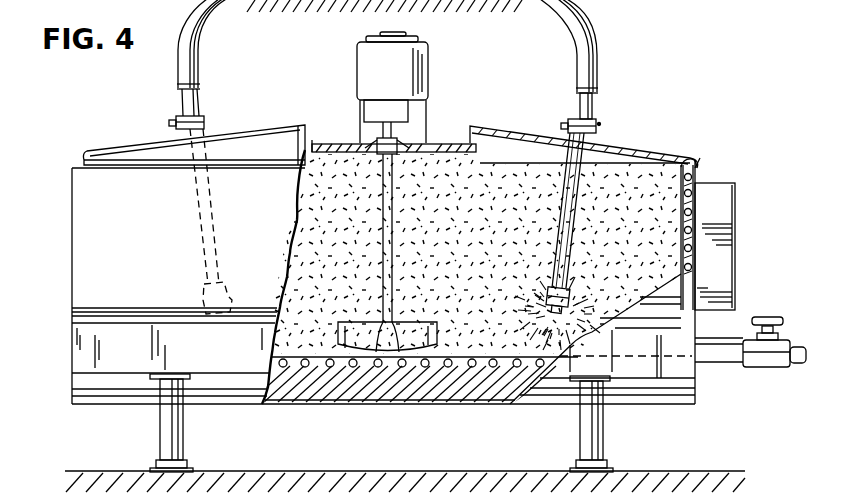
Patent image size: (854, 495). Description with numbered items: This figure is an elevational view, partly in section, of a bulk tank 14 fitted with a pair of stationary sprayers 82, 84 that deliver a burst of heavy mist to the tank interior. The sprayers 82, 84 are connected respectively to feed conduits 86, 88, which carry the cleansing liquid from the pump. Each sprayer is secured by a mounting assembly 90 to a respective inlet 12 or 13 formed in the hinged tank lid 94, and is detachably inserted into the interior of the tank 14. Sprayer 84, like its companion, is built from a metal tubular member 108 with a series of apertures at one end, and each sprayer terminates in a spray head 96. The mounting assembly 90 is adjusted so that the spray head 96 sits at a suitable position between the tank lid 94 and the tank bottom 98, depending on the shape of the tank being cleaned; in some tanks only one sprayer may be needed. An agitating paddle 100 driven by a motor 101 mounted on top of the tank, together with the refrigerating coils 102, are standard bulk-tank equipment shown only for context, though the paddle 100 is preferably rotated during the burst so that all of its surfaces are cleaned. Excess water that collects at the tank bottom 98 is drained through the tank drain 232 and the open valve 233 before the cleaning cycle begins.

The inlet 12 is at (212, 128).
The inlet 13 is at (600, 138).
The tank 14 is at (72, 186).
The sprayer 82 is at (185, 106).
The sprayer 84 is at (592, 102).
The feed conduit 86 is at (202, 34).
The feed conduit 88 is at (585, 32).
The mounting assembly 90 is at (568, 124).
The hinged tank lid 94 is at (138, 142).
The spray head 96 is at (580, 288).
The tank bottom 98 is at (457, 357).
The agitating paddle 100 is at (363, 320).
The motor 101 is at (358, 76).
The refrigerating coils 102 is at (396, 380).
The metal tubular member 108 is at (574, 242).
The tank drain 232 is at (792, 366).
The valve 233 is at (789, 292).